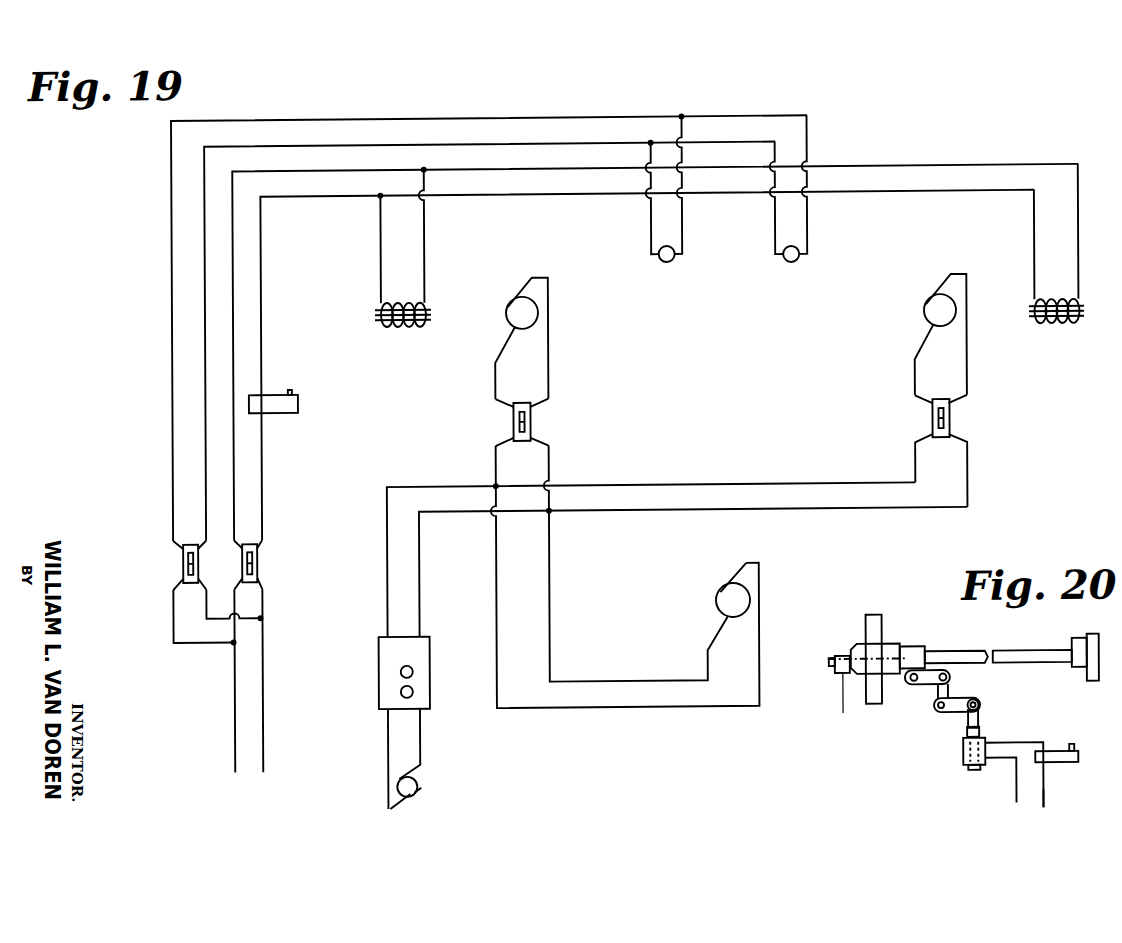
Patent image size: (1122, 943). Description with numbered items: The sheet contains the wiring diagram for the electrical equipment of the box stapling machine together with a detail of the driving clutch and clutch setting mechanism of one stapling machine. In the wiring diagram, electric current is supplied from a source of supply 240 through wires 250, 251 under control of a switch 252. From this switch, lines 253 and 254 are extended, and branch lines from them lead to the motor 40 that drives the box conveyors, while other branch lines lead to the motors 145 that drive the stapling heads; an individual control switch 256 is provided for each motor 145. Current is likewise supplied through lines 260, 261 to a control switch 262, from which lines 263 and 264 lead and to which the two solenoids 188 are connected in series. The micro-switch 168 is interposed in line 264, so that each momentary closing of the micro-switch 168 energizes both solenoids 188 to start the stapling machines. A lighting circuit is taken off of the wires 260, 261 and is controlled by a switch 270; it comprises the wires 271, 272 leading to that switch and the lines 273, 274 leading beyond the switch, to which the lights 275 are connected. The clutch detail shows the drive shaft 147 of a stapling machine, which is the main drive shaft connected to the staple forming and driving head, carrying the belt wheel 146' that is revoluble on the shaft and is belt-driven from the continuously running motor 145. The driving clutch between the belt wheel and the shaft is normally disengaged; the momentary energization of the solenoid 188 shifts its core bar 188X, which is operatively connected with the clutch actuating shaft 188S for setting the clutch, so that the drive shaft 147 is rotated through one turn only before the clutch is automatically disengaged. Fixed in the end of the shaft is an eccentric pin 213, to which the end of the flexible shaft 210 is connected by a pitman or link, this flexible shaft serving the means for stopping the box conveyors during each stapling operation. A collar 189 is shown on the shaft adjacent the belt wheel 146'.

In FIG. 19, the line 273 is at (171, 468).
In FIG. 19, the line 274 is at (204, 433).
In FIG. 19, the line 263 is at (232, 478).
In FIG. 19, the line 264 is at (260, 505).
In FIG. 20, the line 264 is at (1046, 808).
In FIG. 19, the switch 270 is at (181, 565).
In FIG. 19, the control switch 262 is at (275, 565).
In FIG. 19, the wire 271 is at (204, 607).
In FIG. 19, the wire 272 is at (171, 640).
In FIG. 19, the line 260 is at (232, 717).
In FIG. 19, the line 261 is at (261, 717).
In FIG. 19, the micro-switch 168 is at (288, 406).
In FIG. 20, the micro-switch 168 is at (1058, 766).
In FIG. 19, the solenoid 188 is at (402, 262).
In FIG. 20, the solenoid 188 is at (963, 765).
In FIG. 19, the light 275 is at (669, 267).
In FIG. 19, the electric motor 145 is at (538, 315).
In FIG. 19, the individual control switch 256 is at (531, 418).
In FIG. 19, the line 253 is at (453, 489).
In FIG. 19, the line 254 is at (451, 514).
In FIG. 19, the motor 40 is at (748, 606).
In FIG. 19, the switch 252 is at (376, 673).
In FIG. 19, the wire 250 is at (385, 753).
In FIG. 19, the wire 251 is at (417, 753).
In FIG. 19, the source of supply 240 is at (410, 797).
In FIG. 20, the belt wheel 146' is at (899, 646).
In FIG. 20, the collar 189 is at (915, 649).
In FIG. 20, the eccentric pin 213 is at (832, 660).
In FIG. 20, the flexible shaft 210 is at (843, 712).
In FIG. 20, the drive shaft 147 is at (1020, 658).
In FIG. 20, the clutch actuating shaft 188S is at (938, 710).
In FIG. 20, the core bar 188X is at (982, 730).